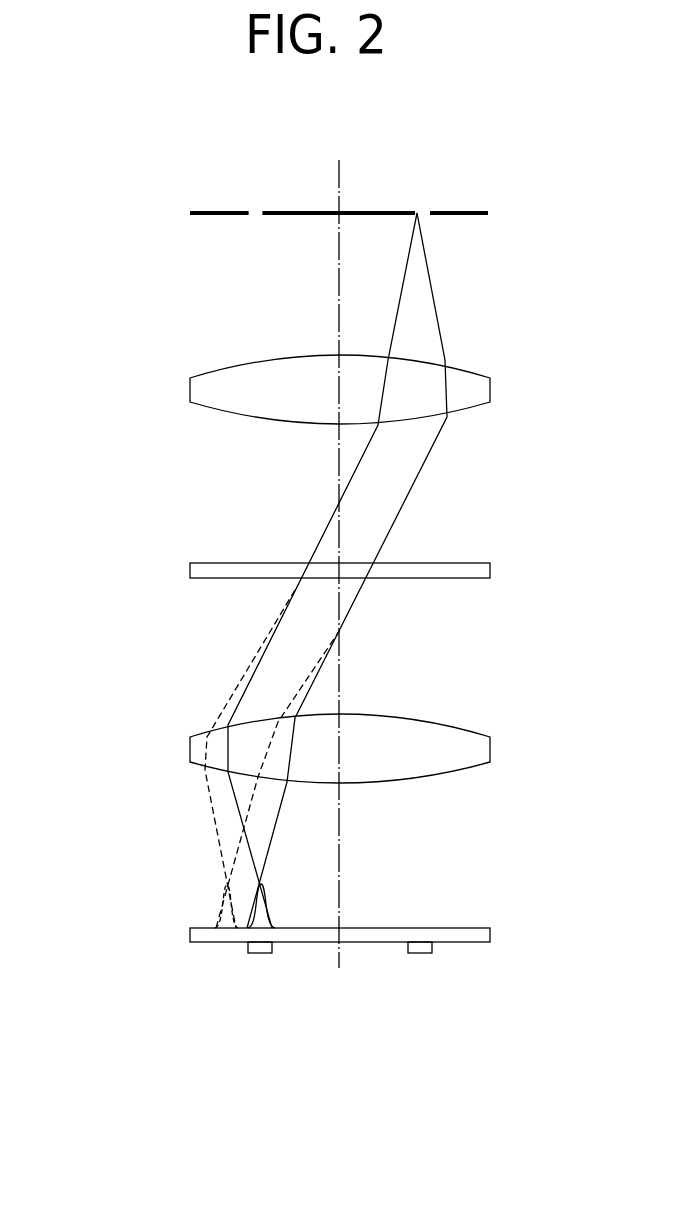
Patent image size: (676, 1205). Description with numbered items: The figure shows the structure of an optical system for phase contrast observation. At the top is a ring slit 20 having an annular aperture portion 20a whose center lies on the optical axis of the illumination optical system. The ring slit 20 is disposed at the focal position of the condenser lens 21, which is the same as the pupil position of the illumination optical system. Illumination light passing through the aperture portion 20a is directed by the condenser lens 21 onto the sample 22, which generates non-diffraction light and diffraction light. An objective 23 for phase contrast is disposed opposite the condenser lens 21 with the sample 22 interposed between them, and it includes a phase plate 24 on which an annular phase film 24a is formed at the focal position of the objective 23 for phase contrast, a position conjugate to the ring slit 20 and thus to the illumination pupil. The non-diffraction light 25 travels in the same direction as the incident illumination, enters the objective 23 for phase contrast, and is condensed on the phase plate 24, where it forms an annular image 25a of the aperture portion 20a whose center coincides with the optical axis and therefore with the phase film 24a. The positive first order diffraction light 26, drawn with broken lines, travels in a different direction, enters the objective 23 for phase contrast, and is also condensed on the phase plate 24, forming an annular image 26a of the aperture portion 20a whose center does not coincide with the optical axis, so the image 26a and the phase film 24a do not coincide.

The ring slit 20 is at (190, 213).
The aperture portion 20a is at (256, 212).
The condenser lens 21 is at (210, 397).
The sample 22 is at (207, 572).
The objective for phase contrast 23 is at (200, 747).
The phase plate 24 is at (193, 933).
The phase film 24a is at (260, 953).
The non-diffraction light 25 is at (310, 688).
The image of the aperture portion formed by non-diffraction light 25a is at (270, 902).
The positive first order diffraction light 26 is at (245, 665).
The image of the aperture portion formed by diffraction light 26a is at (217, 903).